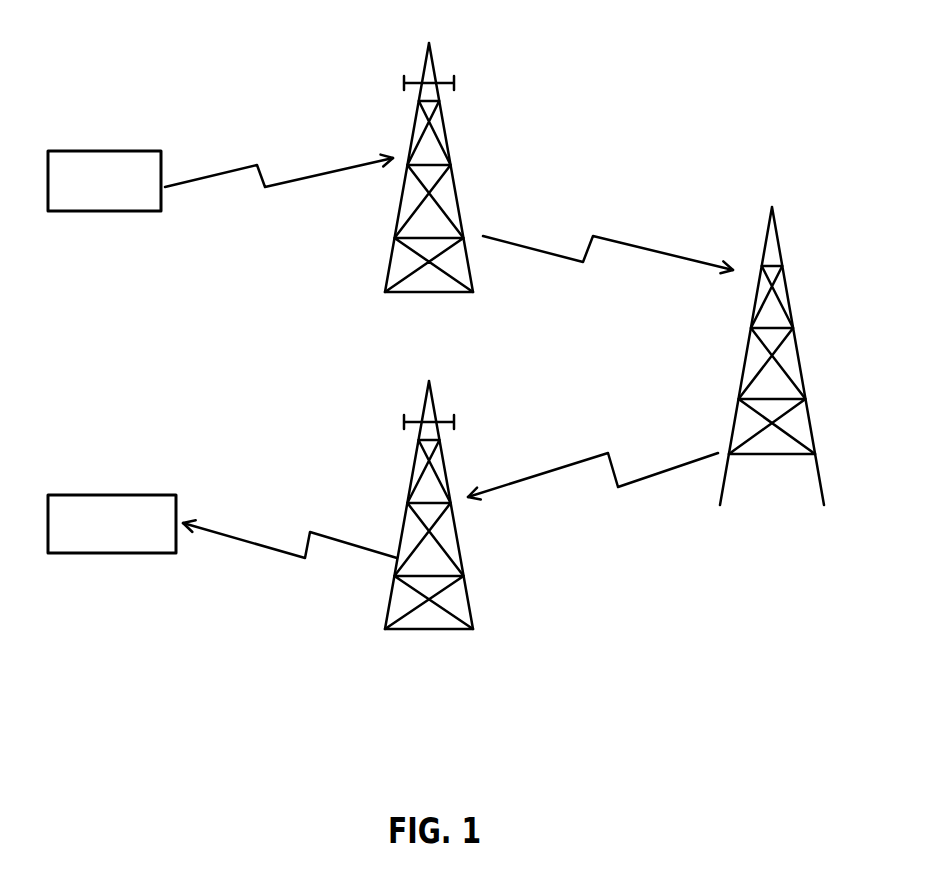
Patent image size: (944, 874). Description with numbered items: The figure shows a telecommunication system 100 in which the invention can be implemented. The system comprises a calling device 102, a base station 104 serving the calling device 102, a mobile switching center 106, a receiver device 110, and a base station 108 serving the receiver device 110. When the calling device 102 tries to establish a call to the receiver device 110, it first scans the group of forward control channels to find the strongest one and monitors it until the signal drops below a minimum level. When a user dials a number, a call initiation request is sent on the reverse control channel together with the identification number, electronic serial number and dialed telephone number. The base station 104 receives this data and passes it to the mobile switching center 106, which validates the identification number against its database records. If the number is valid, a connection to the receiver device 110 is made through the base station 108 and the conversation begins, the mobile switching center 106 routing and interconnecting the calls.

The telecommunication system 100 is at (578, 663).
The calling device 102 is at (90, 213).
The base station 104 is at (448, 129).
The mobile switching center 106 is at (807, 370).
The base station 108 is at (463, 561).
The receiver device 110 is at (103, 556).